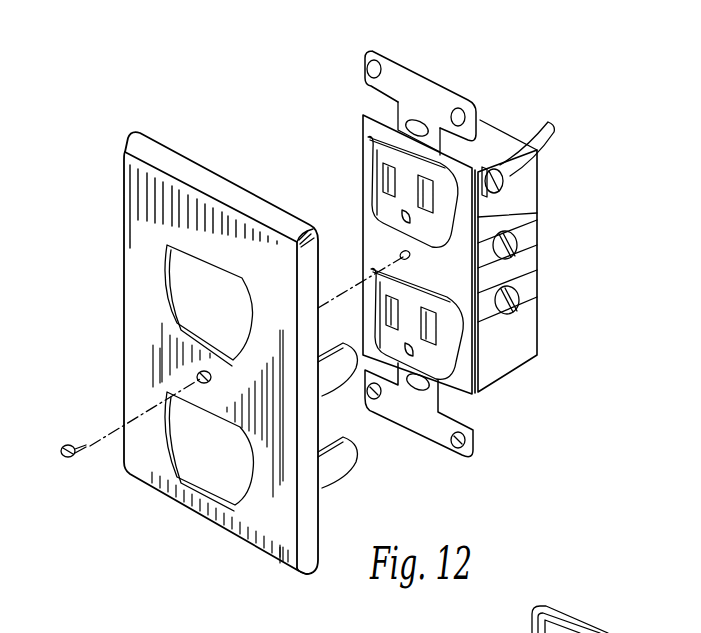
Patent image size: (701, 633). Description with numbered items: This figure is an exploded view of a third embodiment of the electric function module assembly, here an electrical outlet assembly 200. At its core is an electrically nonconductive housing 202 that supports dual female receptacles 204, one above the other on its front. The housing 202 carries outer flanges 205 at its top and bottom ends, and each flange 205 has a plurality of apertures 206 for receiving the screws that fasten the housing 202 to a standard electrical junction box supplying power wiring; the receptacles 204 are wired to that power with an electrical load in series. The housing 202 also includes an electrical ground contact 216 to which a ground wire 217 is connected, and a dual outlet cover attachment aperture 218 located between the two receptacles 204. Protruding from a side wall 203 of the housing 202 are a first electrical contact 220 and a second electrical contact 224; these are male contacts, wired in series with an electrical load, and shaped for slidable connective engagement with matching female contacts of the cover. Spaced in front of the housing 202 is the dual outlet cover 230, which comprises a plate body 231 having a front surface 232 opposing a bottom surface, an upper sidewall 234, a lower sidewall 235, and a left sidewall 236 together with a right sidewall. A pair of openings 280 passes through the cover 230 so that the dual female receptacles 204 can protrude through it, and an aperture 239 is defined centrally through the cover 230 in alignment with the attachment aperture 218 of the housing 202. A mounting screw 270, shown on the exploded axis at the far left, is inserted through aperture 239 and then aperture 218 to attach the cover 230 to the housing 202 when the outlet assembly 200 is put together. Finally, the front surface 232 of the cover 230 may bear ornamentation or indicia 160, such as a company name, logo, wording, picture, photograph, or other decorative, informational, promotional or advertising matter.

The electrical outlet assembly 200 is at (222, 78).
The nonconductive housing 202 is at (490, 138).
The side wall 203 is at (528, 283).
The dual female receptacles 204 is at (378, 157).
The outer flanges 205 is at (441, 85).
The apertures 206 is at (455, 438).
The electrical ground contact 216 is at (498, 167).
The ground wire 217 is at (550, 145).
The dual outlet cover attachment aperture 218 is at (405, 252).
The first electrical contact 220 is at (520, 240).
The second electrical contact 224 is at (520, 297).
The dual outlet cover 230 is at (125, 205).
The plate body 231 is at (125, 275).
The front surface 232 is at (277, 443).
The upper sidewall 234 is at (166, 152).
The lower sidewall 235 is at (298, 572).
The left sidewall 236 is at (317, 265).
The aperture 239 is at (198, 374).
The mounting screw 270 is at (211, 357).
The indicia 160 is at (274, 520).
The pair of openings 280 is at (608, 619).